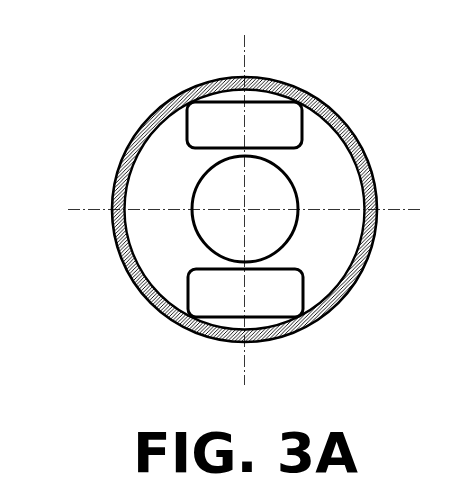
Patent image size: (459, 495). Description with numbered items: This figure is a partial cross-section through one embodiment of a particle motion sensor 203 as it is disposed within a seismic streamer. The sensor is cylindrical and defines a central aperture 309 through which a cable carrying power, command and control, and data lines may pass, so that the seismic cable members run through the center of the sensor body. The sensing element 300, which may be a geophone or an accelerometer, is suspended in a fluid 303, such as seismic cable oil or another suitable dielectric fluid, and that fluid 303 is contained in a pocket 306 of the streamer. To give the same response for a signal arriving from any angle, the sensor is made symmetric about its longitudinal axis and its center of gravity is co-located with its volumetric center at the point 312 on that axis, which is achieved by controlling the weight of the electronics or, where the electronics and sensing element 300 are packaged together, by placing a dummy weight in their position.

The particle motion sensor 203 is at (100, 43).
The sensing element 300 is at (293, 110).
The fluid 303 is at (357, 147).
The pocket 306 is at (266, 273).
The aperture 309 is at (245, 209).
The point 312 is at (245, 208).